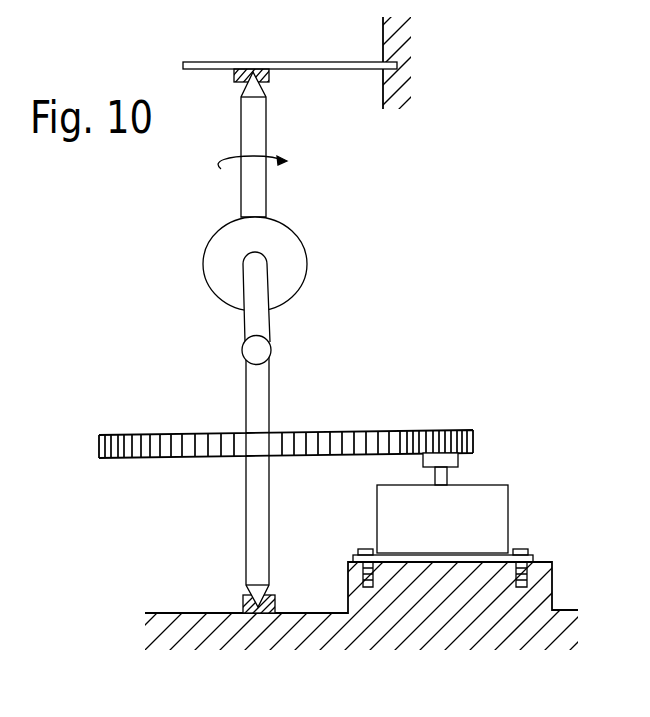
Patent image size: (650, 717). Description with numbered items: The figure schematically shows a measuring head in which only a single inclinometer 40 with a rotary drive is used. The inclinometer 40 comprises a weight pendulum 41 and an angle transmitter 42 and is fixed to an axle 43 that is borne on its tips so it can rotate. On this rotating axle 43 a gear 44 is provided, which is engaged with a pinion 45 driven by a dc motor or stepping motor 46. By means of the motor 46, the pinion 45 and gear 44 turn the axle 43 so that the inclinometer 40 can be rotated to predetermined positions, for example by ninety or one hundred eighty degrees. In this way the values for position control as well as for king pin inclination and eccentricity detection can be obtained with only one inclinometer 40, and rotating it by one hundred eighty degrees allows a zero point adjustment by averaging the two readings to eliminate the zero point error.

The inclinometer 40 is at (270, 287).
The weight pendulum 41 is at (260, 352).
The angle transmitter 42 is at (218, 268).
The axle 43 is at (255, 187).
The gear 44 is at (150, 440).
The pinion 45 is at (470, 431).
The motor 46 is at (500, 515).